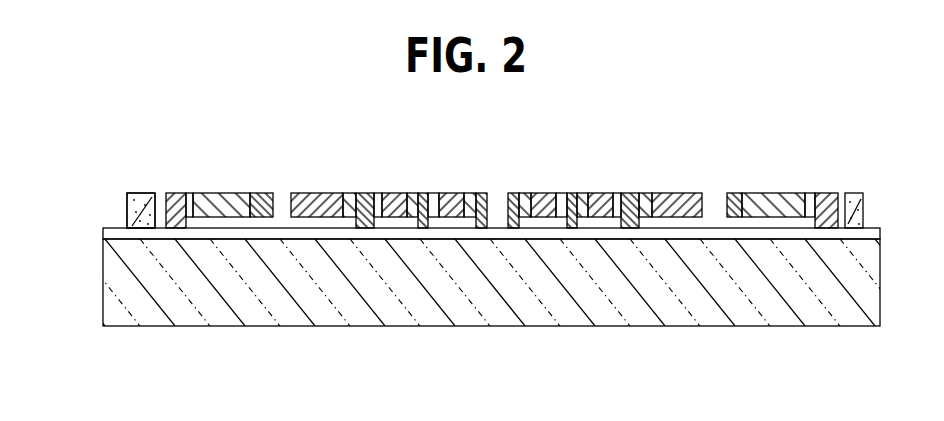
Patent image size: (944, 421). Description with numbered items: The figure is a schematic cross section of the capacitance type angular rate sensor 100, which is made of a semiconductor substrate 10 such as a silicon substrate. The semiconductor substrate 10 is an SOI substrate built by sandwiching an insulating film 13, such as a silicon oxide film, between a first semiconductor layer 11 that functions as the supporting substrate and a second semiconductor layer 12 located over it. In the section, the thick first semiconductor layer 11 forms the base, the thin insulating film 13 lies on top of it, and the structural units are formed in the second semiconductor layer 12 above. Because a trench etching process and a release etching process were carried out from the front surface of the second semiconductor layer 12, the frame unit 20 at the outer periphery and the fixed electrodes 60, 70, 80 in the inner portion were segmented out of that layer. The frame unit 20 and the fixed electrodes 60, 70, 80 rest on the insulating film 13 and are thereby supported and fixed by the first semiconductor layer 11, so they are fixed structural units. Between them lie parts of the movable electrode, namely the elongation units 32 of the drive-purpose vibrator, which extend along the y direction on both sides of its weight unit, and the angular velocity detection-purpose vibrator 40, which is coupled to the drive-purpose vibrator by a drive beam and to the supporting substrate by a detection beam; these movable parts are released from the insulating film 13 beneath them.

The capacitance type angular rate sensor 100 is at (99, 187).
The semiconductor substrate 10 is at (122, 330).
The first semiconductor layer 11 is at (112, 275).
The second semiconductor layer 12 is at (135, 208).
The insulating film 13 is at (112, 233).
The frame unit 20 is at (140, 192).
The elongation units 32 is at (394, 198).
The angular velocity detection-purpose vibrator 40 is at (260, 192).
The fixed electrode 60 is at (425, 200).
The fixed electrode 70 is at (172, 192).
The fixed electrode 80 is at (365, 200).